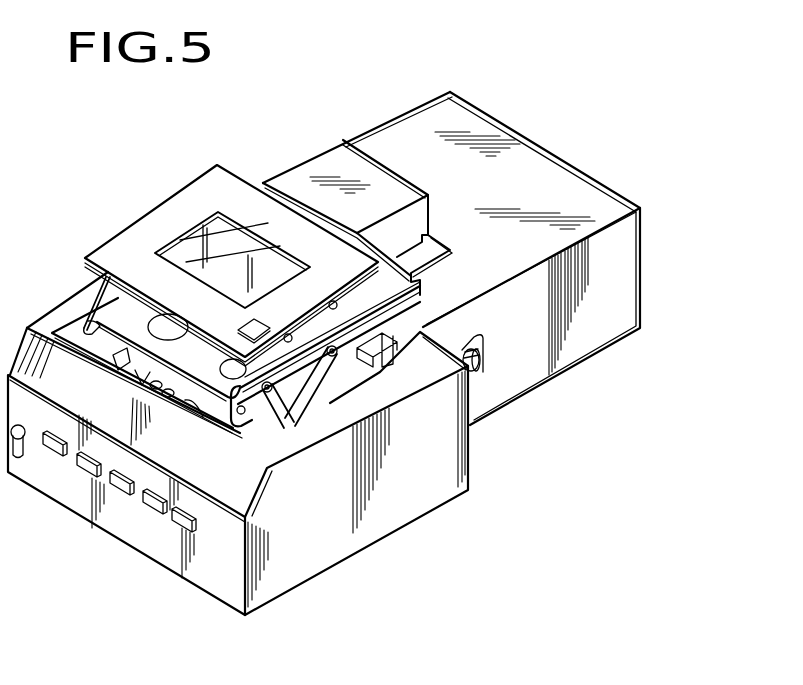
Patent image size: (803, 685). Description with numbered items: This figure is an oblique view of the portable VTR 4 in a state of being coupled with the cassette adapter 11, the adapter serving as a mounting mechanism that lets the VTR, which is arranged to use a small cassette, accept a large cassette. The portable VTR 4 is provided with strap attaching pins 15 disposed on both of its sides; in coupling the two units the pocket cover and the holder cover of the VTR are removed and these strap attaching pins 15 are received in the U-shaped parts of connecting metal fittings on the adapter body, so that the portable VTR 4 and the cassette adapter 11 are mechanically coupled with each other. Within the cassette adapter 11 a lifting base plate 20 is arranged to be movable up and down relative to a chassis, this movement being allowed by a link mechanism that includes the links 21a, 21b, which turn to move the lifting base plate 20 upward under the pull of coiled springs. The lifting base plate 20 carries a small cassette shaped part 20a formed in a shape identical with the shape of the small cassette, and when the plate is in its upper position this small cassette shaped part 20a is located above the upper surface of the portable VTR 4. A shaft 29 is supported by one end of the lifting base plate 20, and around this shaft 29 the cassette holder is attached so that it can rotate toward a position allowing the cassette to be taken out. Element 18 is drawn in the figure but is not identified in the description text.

The portable VTR 4 is at (585, 333).
The cassette adapter 11 is at (408, 500).
The strap attaching pin 15 is at (478, 360).
The lid 18 is at (205, 193).
The lifting base plate 20 is at (357, 186).
The small cassette shaped part 20a is at (367, 175).
The link 21a is at (325, 418).
The link 21b is at (292, 428).
The shaft 29 is at (90, 302).